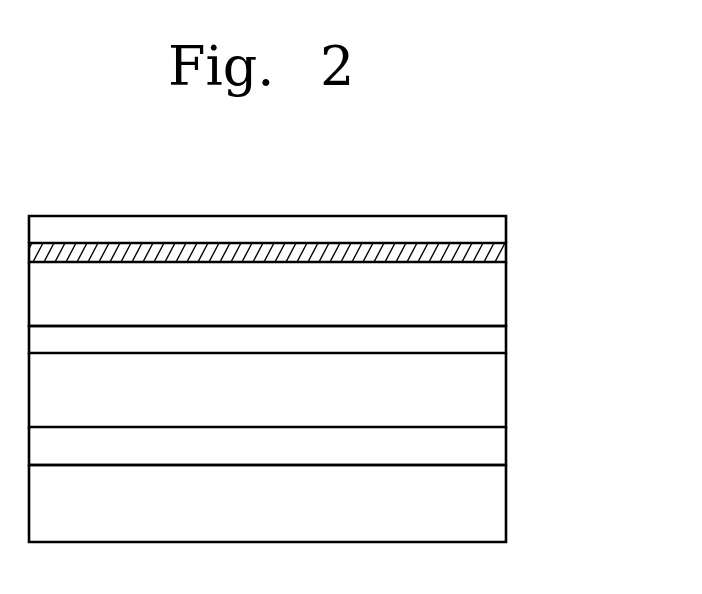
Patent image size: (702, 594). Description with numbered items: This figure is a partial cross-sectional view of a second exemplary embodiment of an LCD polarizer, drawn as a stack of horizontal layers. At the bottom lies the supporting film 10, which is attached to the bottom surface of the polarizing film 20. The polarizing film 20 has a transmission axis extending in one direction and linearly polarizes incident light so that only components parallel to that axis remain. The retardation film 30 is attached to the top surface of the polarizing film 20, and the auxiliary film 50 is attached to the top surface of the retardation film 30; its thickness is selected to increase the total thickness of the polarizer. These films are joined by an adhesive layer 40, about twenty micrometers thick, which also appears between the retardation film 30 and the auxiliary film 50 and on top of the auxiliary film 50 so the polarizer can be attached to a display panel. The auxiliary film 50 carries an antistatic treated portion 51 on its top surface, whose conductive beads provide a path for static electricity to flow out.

The supporting film 10 is at (487, 507).
The polarizing film 20 is at (487, 450).
The retardation film 30 is at (487, 392).
The adhesive layer 40 is at (487, 344).
The auxiliary film 50 is at (487, 297).
The antistatic treated portion 51 is at (487, 260).